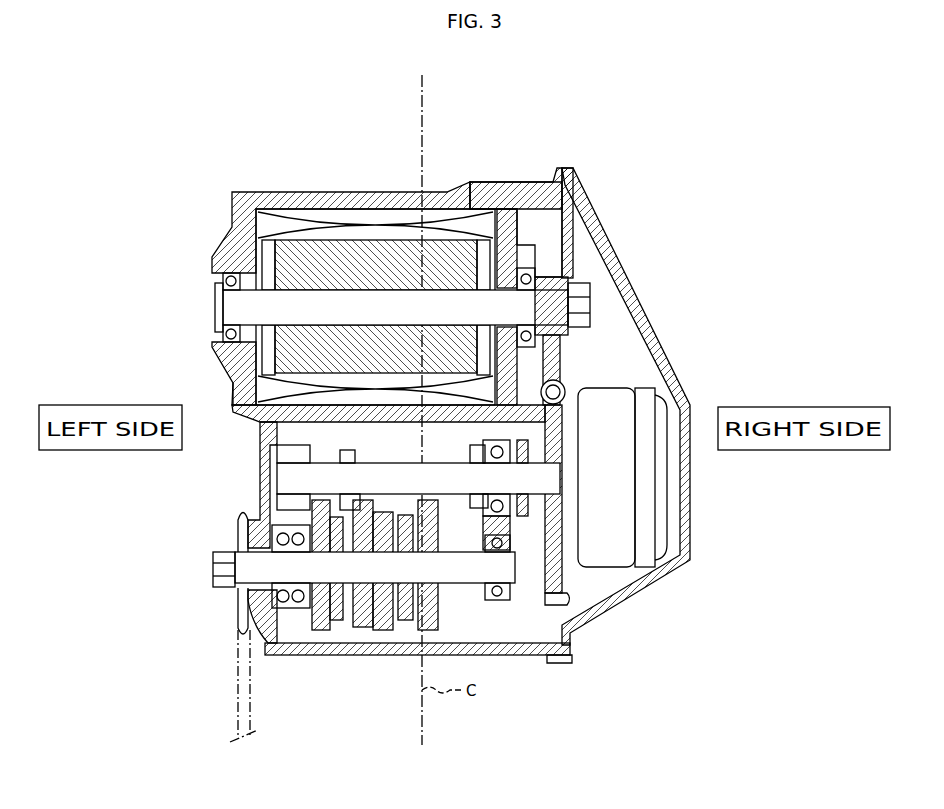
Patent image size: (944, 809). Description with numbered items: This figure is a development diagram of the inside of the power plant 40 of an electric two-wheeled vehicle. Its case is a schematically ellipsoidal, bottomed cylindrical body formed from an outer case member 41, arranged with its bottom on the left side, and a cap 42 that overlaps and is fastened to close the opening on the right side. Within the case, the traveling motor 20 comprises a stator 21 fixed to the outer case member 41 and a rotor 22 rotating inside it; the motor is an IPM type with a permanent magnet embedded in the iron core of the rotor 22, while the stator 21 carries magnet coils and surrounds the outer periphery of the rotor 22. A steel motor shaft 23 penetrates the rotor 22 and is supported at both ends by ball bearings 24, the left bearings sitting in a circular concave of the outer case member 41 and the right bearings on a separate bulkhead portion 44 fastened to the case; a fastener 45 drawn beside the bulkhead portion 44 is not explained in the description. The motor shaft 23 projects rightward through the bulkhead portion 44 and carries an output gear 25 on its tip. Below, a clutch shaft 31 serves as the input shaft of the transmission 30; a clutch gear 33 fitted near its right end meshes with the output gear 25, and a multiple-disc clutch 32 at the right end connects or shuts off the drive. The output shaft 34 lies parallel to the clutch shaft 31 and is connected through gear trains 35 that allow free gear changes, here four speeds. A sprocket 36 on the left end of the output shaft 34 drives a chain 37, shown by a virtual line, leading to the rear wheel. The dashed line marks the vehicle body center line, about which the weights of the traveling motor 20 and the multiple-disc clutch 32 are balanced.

The traveling motor 20 is at (320, 204).
The stator 21 is at (369, 210).
The rotor 22 is at (376, 306).
The motor shaft 23 is at (215, 307).
The ball bearings 24 is at (210, 332).
The output gear 25 is at (565, 338).
The transmission 30 is at (455, 587).
The clutch shaft 31 is at (282, 478).
The multiple-disc clutch 32 is at (598, 572).
The clutch gear 33 is at (544, 577).
The output shaft 34 is at (240, 570).
The gear trains 35 is at (325, 633).
The sprocket 36 is at (238, 622).
The chain 37 is at (238, 690).
The power plant 40 is at (624, 202).
The outer case member 41 is at (392, 422).
The cap 42 is at (634, 297).
The bulkhead portion 44 is at (537, 191).
The fastener 45 is at (532, 352).